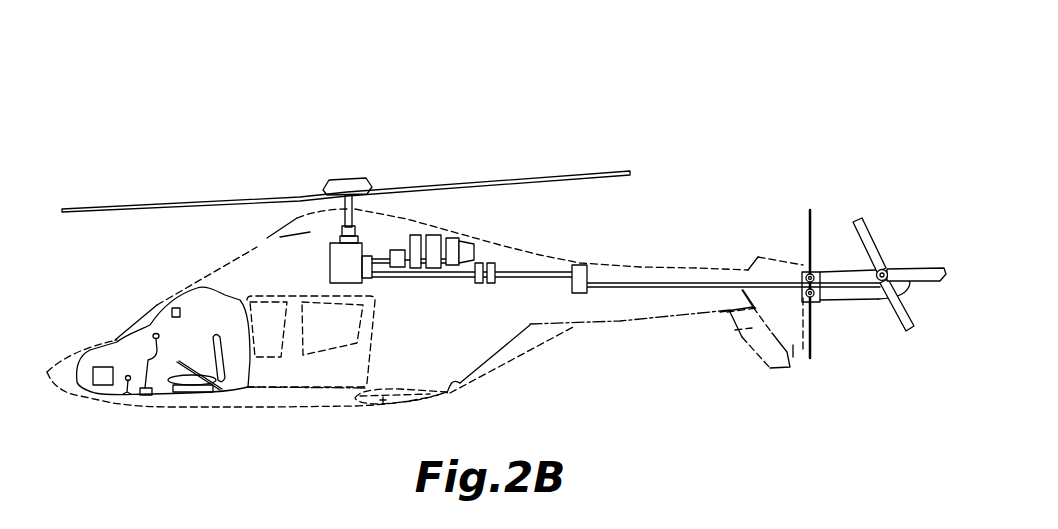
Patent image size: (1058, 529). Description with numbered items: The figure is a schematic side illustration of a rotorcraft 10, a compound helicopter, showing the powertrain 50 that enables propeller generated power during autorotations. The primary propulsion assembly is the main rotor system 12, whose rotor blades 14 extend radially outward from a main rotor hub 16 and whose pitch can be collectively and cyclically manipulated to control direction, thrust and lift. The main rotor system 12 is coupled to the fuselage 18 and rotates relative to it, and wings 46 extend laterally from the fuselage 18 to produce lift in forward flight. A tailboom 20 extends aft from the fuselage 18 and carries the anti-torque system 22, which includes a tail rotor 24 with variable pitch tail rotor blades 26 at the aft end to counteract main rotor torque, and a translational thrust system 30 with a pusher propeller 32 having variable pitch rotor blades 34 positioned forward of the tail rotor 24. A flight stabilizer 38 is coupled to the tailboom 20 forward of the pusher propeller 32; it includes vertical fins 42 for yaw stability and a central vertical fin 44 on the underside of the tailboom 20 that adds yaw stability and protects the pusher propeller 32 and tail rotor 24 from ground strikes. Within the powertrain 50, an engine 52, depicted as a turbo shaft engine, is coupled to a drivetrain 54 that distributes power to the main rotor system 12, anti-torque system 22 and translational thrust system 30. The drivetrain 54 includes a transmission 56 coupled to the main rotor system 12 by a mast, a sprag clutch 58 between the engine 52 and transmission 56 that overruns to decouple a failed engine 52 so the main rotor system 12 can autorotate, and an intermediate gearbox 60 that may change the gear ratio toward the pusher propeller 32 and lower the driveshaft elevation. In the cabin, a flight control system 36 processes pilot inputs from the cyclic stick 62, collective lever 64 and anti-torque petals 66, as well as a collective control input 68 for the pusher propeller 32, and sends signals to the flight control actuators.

The rotorcraft 10 is at (286, 130).
The main rotor system 12 is at (346, 172).
The rotor blades 14 is at (239, 196).
The main rotor hub 16 is at (345, 178).
The fuselage 18 is at (257, 410).
The tailboom 20 is at (641, 325).
The anti-torque system 22 is at (907, 279).
The tail rotor 24 is at (861, 221).
The tail rotor blades 26 is at (907, 332).
The translational thrust system 30 is at (807, 221).
The pusher propeller 32 is at (813, 247).
The rotor blades 34 is at (812, 352).
The flight control system 36 is at (103, 385).
The flight stabilizer 38 is at (768, 340).
The vertical fins 42 is at (794, 356).
The central vertical fin 44 is at (735, 331).
The wings 46 is at (382, 406).
The powertrain 50 is at (477, 241).
The engine 52 is at (447, 246).
The drivetrain 54 is at (566, 270).
The transmission 56 is at (330, 262).
The sprag clutch 58 is at (397, 250).
The intermediate gearbox 60 is at (578, 293).
The cyclic stick 62 is at (153, 340).
The collective lever 64 is at (186, 385).
The anti-torque petals 66 is at (118, 383).
The collective control input 68 is at (174, 308).